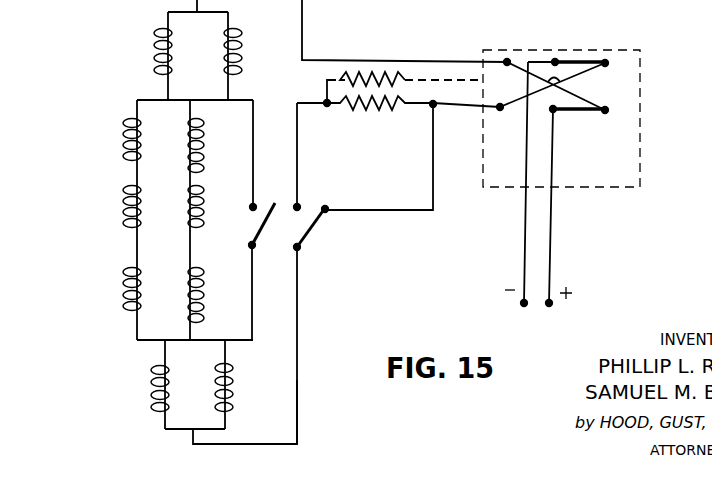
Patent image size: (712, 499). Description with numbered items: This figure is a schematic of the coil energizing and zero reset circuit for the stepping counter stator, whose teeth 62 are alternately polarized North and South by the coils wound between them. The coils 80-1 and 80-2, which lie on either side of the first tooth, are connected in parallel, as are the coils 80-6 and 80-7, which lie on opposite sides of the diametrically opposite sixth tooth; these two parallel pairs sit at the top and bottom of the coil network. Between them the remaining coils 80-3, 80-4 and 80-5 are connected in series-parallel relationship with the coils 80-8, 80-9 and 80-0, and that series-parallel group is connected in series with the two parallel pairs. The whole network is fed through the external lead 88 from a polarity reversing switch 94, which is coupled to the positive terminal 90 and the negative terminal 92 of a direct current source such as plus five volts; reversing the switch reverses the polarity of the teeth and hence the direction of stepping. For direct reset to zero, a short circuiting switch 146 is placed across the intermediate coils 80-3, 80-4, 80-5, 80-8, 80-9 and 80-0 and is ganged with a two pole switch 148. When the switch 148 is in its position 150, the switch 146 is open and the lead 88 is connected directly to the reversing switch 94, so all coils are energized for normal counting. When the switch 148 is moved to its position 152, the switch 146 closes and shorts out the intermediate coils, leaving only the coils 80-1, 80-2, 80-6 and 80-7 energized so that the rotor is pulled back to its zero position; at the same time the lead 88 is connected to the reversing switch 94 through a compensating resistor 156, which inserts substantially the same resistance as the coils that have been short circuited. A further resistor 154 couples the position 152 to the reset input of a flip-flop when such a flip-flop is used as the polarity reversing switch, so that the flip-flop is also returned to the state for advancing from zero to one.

The teeth 62 is at (602, 7).
The coil 80-1 is at (156, 50).
The coil 80-2 is at (224, 70).
The coil 80-3 is at (123, 143).
The coil 80-4 is at (123, 217).
The coil 80-5 is at (123, 297).
The coil 80-6 is at (151, 382).
The coil 80-7 is at (224, 378).
The coil 80-8 is at (188, 157).
The coil 80-9 is at (188, 227).
The coil 80-0 is at (188, 318).
The external lead 88 is at (298, 410).
The positive terminal 90 is at (549, 303).
The negative terminal 92 is at (523, 303).
The polarity reversing switch 94 is at (640, 152).
The short circuiting switch 146 is at (252, 245).
The two pole switch 148 is at (313, 222).
The switch position 150 is at (327, 204).
The switch position 152 is at (300, 194).
The resistor 154 is at (376, 104).
The compensating resistor 156 is at (397, 80).